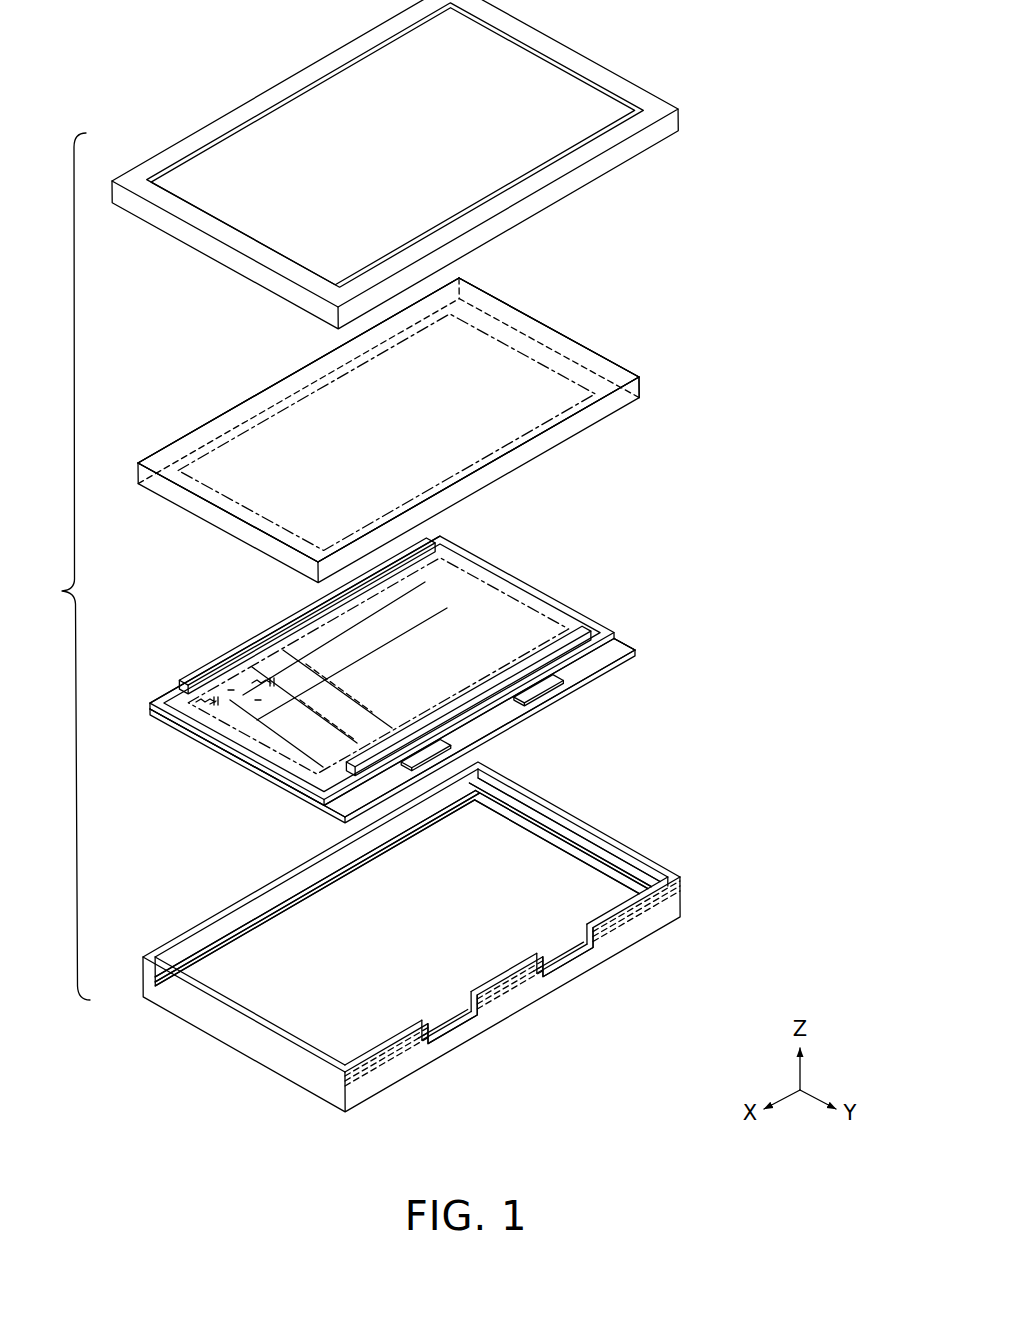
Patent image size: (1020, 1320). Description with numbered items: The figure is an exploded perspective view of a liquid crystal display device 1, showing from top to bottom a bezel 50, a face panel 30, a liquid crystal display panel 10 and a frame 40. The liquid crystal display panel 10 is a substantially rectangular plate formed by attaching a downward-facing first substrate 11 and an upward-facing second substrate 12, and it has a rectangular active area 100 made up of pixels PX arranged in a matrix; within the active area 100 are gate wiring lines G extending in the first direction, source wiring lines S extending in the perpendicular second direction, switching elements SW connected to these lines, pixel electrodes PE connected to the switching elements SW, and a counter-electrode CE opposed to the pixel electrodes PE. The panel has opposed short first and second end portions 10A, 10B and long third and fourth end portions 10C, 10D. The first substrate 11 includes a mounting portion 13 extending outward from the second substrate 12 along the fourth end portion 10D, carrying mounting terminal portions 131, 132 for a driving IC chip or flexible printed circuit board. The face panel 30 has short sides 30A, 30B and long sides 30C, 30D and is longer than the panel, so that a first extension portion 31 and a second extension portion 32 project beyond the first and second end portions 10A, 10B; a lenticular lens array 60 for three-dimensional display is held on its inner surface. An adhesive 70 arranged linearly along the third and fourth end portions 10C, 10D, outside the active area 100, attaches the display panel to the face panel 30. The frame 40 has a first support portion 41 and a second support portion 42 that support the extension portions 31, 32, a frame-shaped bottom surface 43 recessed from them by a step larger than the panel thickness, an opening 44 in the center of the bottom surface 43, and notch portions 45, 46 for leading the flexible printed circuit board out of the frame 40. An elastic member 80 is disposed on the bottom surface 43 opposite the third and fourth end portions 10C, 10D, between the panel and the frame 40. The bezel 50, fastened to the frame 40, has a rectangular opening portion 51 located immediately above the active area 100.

The liquid crystal display device 1 is at (66, 566).
The liquid crystal display panel 10 is at (424, 663).
The first substrate 11 is at (150, 714).
The second substrate 12 is at (160, 700).
The mounting portion 13 is at (645, 642).
The mounting terminal portion 131 is at (462, 750).
The mounting terminal portion 132 is at (560, 690).
The first end portion 10A is at (218, 760).
The second end portion 10B is at (610, 616).
The third end portion 10C is at (165, 686).
The fourth end portion 10D is at (625, 667).
The active area 100 is at (485, 548).
The adhesive 70 is at (283, 608).
The gate wiring line G is at (426, 583).
The source wiring line S is at (315, 762).
The pixel PX is at (170, 688).
The pixel electrode PE is at (232, 685).
The switching element SW is at (210, 706).
The counter-electrode CE is at (257, 700).
The face panel 30 is at (433, 409).
The first extension portion 31 is at (158, 462).
The second extension portion 32 is at (616, 372).
The short side 30A is at (200, 516).
The short side 30B is at (505, 288).
The long side 30C is at (243, 388).
The long side 30D is at (596, 428).
The lenticular lens array 60 is at (537, 360).
The bezel 50 is at (427, 164).
The opening portion 51 is at (582, 100).
The frame 40 is at (459, 938).
The first support portion 41 is at (174, 958).
The second support portion 42 is at (550, 830).
The bottom surface 43 is at (565, 860).
The opening 44 is at (586, 896).
The notch portion 45 is at (462, 1024).
The notch portion 46 is at (586, 950).
The elastic member 80 is at (262, 893).